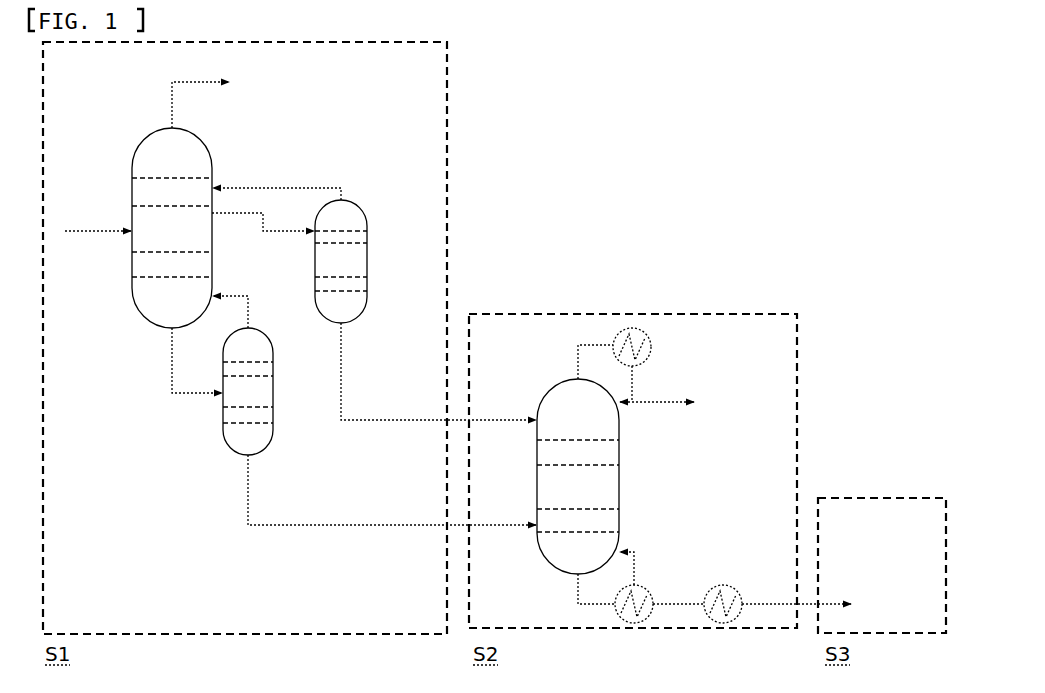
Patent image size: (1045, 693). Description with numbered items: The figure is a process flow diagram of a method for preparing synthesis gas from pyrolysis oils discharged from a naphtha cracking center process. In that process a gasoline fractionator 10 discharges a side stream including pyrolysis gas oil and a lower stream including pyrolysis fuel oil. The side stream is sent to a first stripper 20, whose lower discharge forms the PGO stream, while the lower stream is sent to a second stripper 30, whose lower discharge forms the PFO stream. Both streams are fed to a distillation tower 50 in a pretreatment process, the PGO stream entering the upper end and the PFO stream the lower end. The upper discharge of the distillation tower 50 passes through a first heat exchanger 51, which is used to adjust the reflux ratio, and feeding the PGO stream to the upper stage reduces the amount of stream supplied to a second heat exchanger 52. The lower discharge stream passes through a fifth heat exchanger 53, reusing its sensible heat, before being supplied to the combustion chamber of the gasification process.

The gasoline fractionator 10 is at (200, 137).
The first stripper 20 is at (313, 292).
The second stripper 30 is at (222, 433).
The distillation tower 50 is at (622, 477).
The first heat exchanger 51 is at (652, 347).
The second heat exchanger 52 is at (638, 585).
The fifth heat exchanger 53 is at (730, 585).